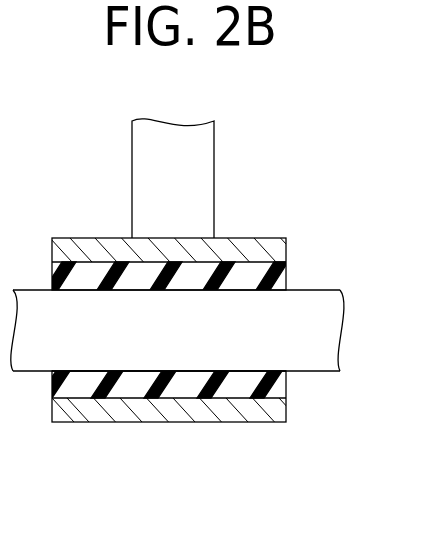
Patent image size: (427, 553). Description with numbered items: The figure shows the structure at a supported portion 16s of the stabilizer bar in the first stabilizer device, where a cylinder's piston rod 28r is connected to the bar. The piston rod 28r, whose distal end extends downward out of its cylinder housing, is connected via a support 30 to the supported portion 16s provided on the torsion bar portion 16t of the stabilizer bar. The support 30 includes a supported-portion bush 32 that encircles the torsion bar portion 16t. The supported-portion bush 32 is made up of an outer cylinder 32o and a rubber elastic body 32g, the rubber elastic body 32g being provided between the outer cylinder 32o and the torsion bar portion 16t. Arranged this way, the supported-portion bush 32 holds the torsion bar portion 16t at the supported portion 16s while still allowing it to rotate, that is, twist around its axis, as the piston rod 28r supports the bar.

The support 30 is at (225, 315).
The supported-portion bush 32 is at (213, 331).
The outer cylinder 32o is at (78, 262).
The rubber elastic body 32g is at (77, 385).
The piston rod 28r is at (207, 177).
The torsion bar portion 16t is at (323, 353).
The supported portion 16s is at (240, 373).